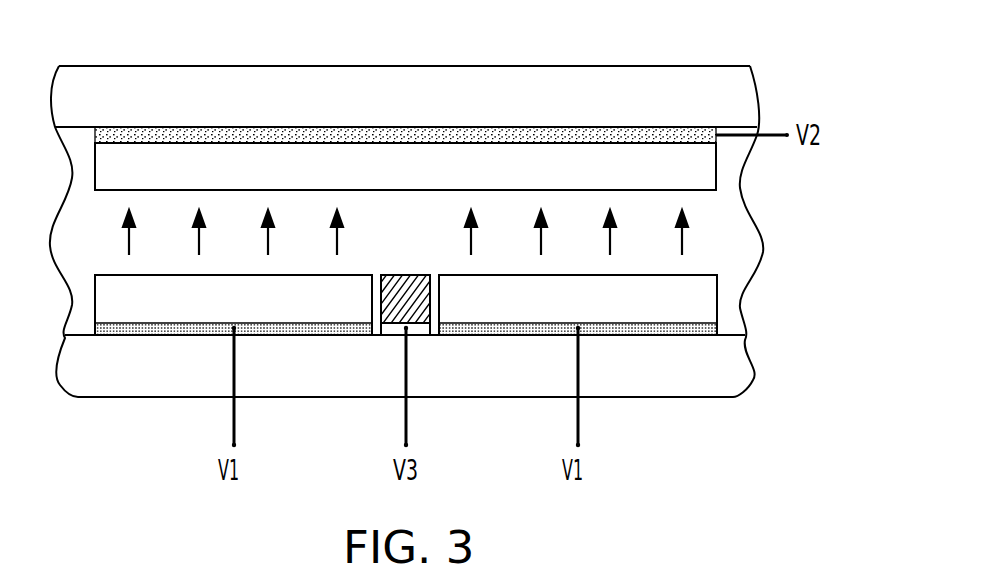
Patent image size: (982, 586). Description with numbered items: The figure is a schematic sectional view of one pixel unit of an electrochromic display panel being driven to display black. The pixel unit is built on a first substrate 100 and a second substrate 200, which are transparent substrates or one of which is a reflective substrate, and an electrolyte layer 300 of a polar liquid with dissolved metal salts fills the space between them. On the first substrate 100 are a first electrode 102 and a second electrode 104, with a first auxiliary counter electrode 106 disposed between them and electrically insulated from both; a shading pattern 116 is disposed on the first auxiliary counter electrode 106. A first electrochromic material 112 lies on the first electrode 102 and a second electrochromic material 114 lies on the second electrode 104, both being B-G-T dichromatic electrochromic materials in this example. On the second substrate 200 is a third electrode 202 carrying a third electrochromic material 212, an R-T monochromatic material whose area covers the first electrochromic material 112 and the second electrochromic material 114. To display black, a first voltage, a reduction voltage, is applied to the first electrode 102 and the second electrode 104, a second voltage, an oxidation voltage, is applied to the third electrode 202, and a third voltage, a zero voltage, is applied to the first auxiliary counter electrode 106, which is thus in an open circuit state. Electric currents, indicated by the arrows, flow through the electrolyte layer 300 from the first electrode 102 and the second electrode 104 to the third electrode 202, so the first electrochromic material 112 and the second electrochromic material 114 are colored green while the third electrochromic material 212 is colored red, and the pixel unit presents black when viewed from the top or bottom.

The first substrate 100 is at (717, 368).
The first electrode 102 is at (131, 330).
The second electrode 104 is at (682, 330).
The first auxiliary counter electrode 106 is at (418, 332).
The first electrochromic material 112 is at (305, 300).
The second electrochromic material 114 is at (508, 300).
The shading pattern 116 is at (395, 315).
The second substrate 200 is at (718, 100).
The third electrode 202 is at (180, 135).
The third electrochromic material 212 is at (260, 165).
The electrolyte layer 300 is at (708, 232).